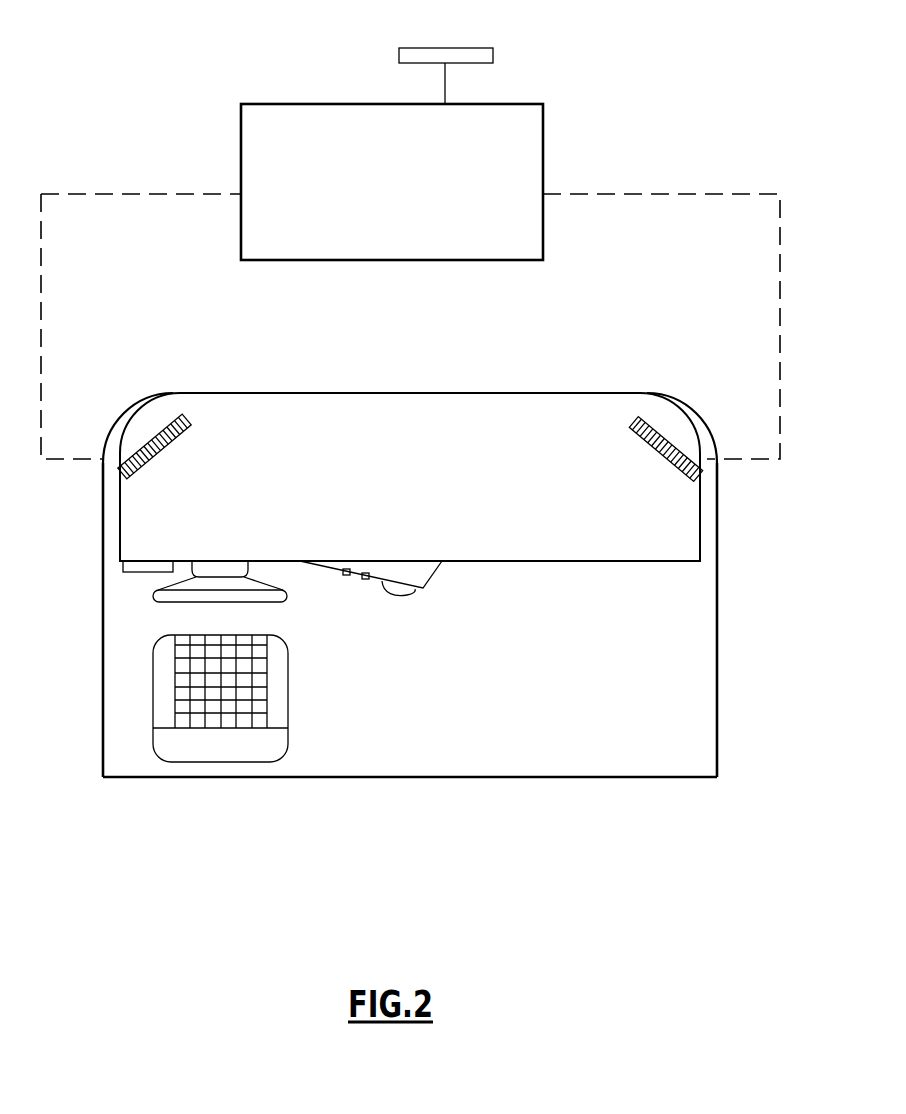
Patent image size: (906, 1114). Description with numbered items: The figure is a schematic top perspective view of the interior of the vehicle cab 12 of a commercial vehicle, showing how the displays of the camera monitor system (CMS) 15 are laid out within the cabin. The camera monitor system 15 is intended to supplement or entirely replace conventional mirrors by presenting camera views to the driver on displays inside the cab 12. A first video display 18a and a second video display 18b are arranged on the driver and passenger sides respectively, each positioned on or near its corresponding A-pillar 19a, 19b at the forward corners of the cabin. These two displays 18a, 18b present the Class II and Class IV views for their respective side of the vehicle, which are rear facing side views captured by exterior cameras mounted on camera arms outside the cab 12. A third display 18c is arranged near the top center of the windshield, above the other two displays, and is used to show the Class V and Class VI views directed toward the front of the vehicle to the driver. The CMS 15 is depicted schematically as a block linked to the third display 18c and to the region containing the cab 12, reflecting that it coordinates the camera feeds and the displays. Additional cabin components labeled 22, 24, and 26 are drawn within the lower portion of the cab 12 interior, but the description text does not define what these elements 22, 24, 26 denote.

The vehicle cab 12 is at (527, 368).
The camera monitor system (CMS) 15 is at (545, 115).
The first video display 18a is at (147, 425).
The second video display 18b is at (672, 426).
The third display 18c is at (491, 48).
The A-pillar 19a is at (122, 432).
The A-pillar 19b is at (700, 432).
The housing 22 is at (632, 721).
The lighting unit 24 is at (348, 590).
The speaker 26 is at (277, 683).